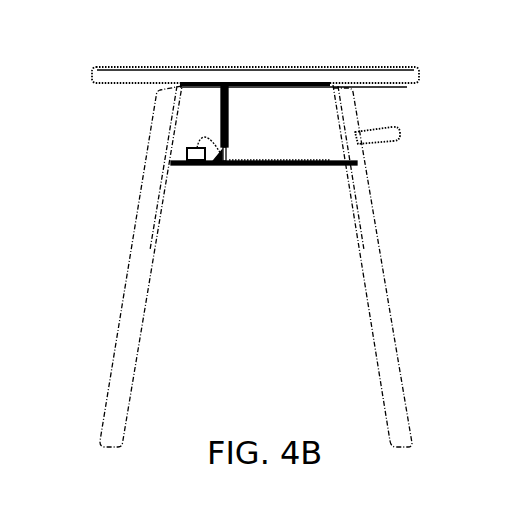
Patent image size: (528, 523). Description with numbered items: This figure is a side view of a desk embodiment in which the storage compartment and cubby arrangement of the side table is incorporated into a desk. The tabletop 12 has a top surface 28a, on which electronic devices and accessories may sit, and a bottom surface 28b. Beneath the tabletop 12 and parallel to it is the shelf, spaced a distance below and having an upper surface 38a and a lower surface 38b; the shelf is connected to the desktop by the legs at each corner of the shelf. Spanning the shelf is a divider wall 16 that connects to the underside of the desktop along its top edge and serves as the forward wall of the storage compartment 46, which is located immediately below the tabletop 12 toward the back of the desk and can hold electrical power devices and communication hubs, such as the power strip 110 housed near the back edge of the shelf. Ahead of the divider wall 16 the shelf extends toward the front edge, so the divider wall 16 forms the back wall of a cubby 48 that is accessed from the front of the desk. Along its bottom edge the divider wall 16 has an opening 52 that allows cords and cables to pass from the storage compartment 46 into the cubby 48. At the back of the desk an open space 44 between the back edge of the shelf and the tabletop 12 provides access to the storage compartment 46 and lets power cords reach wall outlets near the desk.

The tabletop 12 is at (108, 73).
The divider wall 16 is at (220, 112).
The top surface 28a is at (403, 67).
The bottom surface 28b is at (403, 86).
The upper surface 38a is at (310, 160).
The lower surface 38b is at (332, 168).
The open space 44 is at (175, 117).
The storage compartment 46 is at (202, 128).
The cubby 48 is at (320, 140).
The power strip 110 is at (193, 153).
The opening 52 is at (212, 160).